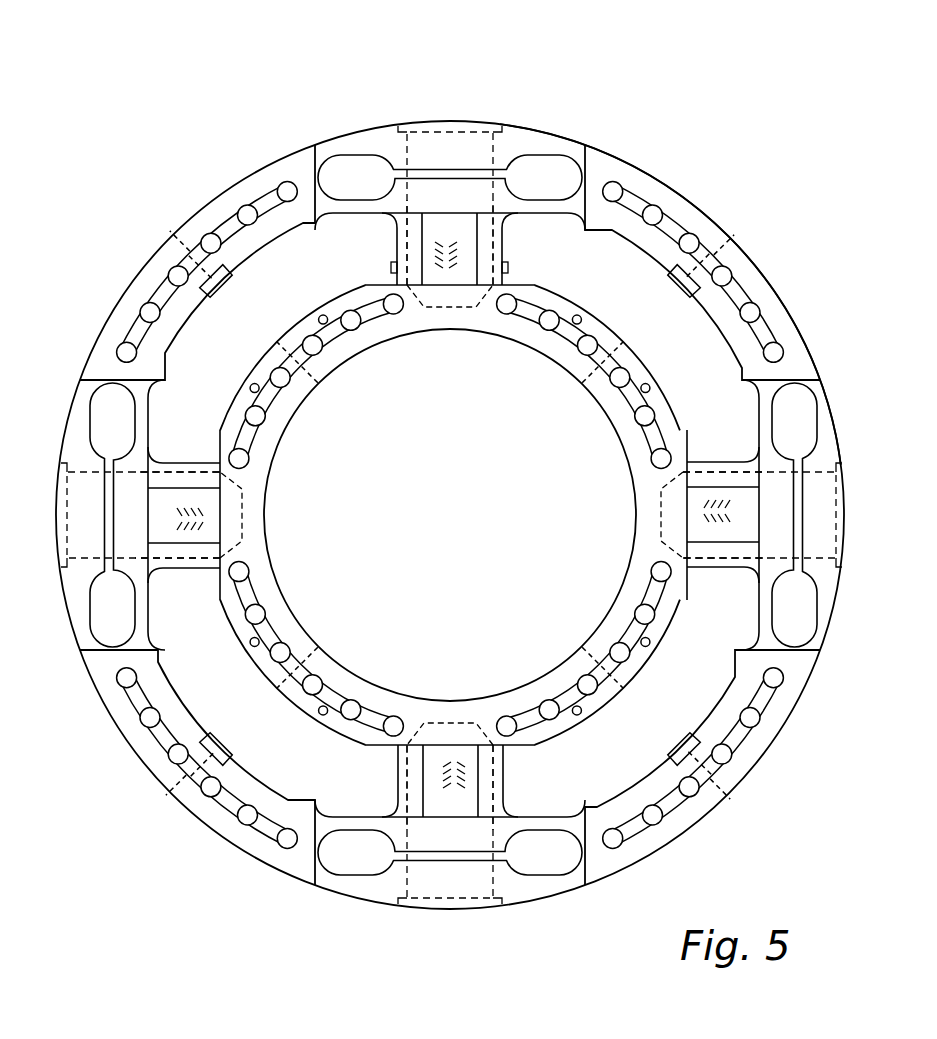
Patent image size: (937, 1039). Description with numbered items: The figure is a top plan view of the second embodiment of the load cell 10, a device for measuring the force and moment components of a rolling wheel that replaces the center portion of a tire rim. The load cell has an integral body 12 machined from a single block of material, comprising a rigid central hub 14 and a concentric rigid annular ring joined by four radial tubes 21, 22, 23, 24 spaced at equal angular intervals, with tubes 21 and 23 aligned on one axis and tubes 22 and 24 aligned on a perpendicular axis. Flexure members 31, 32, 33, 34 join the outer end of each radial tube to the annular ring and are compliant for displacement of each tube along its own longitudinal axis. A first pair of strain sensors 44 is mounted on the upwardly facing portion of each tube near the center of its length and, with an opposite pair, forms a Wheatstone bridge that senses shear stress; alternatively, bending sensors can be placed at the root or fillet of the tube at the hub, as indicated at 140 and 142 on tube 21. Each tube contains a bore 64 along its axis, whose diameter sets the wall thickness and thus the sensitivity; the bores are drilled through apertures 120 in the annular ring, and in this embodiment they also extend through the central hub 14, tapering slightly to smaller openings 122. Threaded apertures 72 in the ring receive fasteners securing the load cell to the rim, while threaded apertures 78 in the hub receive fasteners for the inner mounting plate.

The load cell 10 is at (552, 84).
The integral body 12 is at (283, 133).
The central hub 14 is at (628, 471).
The radial tube 21 is at (505, 234).
The radial tube 22 is at (703, 466).
The radial tube 23 is at (393, 786).
The radial tube 24 is at (186, 463).
The flexure member 31 is at (538, 168).
The flexure member 32 is at (800, 612).
The flexure member 33 is at (549, 863).
The flexure member 34 is at (110, 612).
The first pair of strain sensors 44 is at (433, 242).
The bore 64 is at (492, 207).
The threaded apertures 72 is at (697, 236).
The threaded apertures 78 is at (392, 315).
The apertures 120 is at (492, 165).
The smaller openings 122 is at (441, 316).
The bending sensor location 140 is at (510, 268).
The bending sensor location 142 is at (390, 268).